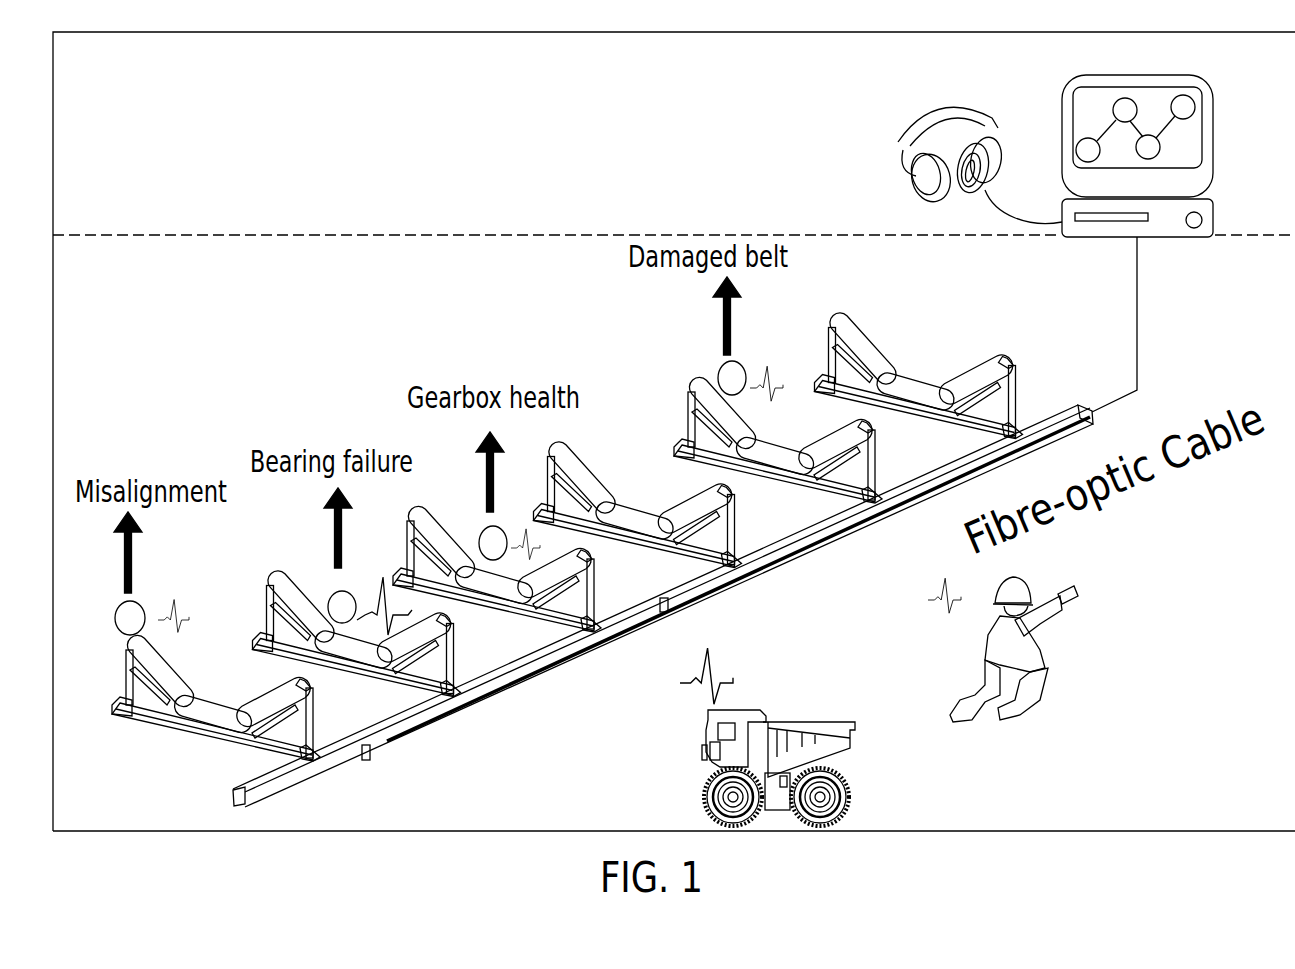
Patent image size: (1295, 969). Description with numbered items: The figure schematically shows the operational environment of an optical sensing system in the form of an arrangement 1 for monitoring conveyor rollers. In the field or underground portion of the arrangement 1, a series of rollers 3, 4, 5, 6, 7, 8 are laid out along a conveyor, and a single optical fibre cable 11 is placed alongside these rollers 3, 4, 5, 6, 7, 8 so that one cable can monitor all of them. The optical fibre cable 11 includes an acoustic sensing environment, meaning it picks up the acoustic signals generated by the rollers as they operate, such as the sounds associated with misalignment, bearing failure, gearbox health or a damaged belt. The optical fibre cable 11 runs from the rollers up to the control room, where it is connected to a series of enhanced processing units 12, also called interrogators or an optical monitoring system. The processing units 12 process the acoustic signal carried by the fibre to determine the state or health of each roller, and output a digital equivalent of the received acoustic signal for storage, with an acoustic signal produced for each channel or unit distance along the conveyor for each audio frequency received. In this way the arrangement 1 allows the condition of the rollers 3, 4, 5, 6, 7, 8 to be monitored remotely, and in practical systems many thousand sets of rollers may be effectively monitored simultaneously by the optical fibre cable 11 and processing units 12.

The arrangement 1 is at (147, 152).
The roller 3 is at (190, 617).
The roller 4 is at (320, 550).
The roller 5 is at (475, 500).
The roller 6 is at (663, 462).
The roller 7 is at (708, 400).
The roller 8 is at (860, 320).
The optical fibre cable 11 is at (535, 637).
The processing units 12 is at (1197, 228).